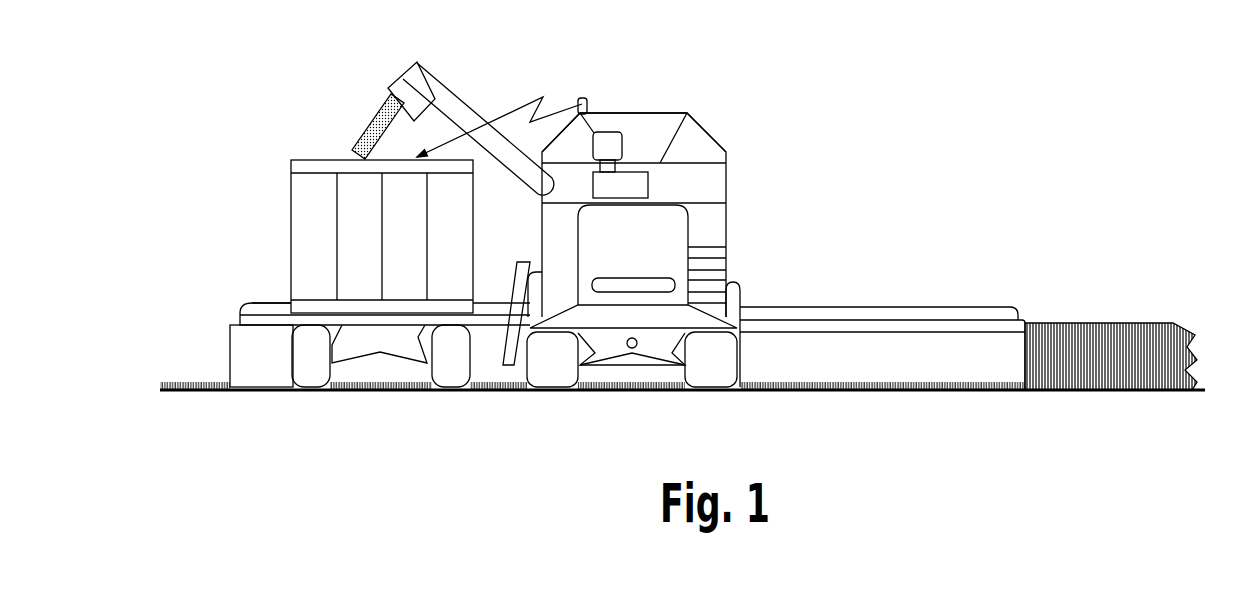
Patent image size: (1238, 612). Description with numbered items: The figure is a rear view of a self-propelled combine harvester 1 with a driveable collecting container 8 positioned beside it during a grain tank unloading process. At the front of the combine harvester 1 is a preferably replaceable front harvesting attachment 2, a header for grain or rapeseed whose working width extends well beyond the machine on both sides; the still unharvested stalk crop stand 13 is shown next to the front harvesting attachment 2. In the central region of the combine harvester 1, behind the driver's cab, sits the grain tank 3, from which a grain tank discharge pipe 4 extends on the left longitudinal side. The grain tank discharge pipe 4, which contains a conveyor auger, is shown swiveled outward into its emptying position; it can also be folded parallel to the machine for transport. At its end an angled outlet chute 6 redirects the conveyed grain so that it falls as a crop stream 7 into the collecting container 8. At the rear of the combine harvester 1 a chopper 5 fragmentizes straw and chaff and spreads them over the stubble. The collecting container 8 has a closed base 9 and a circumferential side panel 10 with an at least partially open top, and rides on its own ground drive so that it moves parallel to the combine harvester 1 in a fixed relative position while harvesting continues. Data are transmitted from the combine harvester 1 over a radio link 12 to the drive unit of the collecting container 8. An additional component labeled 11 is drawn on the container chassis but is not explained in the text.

The self-propelled combine harvester 1 is at (740, 220).
The front harvesting attachment 2 is at (855, 340).
The grain tank 3 is at (703, 173).
The grain tank discharge pipe 4 is at (447, 97).
The chopper 5 is at (705, 318).
The angled outlet chute 6 is at (402, 87).
The crop stream 7 is at (363, 127).
The collecting container 8 is at (280, 237).
The closed base 9 is at (358, 305).
The circumferential side panel 10 is at (350, 273).
The axle 11 is at (390, 333).
The radio link 12 is at (532, 97).
The stalk crop stand 13 is at (1090, 353).